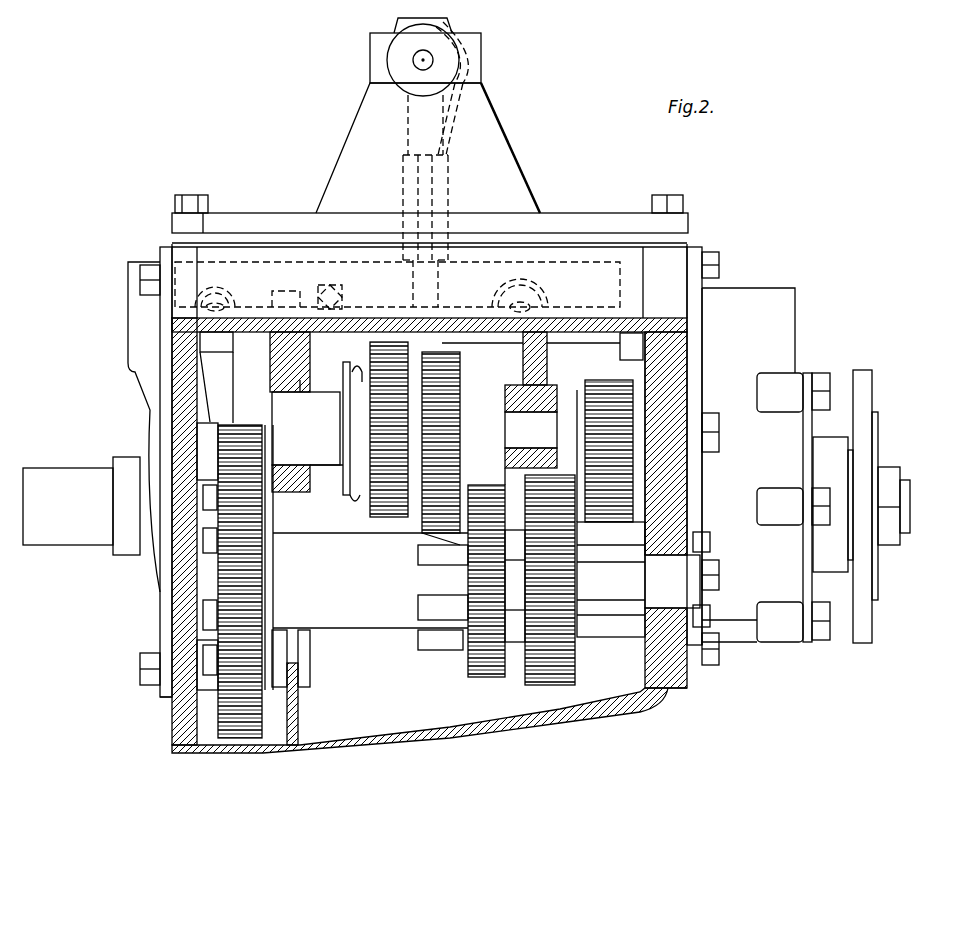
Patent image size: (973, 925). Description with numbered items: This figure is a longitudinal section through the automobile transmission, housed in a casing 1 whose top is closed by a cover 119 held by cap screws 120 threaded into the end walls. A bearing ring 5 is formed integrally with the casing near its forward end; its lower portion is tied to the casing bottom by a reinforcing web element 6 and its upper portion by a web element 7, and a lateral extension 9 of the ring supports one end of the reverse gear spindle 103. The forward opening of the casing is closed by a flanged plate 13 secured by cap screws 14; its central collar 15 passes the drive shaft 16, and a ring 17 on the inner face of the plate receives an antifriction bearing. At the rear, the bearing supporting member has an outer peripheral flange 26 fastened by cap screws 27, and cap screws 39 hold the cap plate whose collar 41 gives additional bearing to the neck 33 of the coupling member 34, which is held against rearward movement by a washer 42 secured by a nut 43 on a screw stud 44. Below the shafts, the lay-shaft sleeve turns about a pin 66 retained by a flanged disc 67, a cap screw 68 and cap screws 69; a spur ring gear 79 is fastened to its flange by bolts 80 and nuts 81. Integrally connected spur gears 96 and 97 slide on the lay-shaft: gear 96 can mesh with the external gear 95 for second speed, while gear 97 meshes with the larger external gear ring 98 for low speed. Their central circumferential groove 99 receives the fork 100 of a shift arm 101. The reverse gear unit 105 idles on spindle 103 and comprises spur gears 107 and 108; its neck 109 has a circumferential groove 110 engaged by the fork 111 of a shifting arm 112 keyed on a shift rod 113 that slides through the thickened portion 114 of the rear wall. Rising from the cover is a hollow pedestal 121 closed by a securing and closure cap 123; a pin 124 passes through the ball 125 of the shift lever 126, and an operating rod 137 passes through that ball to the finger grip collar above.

The casing 1 is at (222, 778).
The bearing ring 5 is at (278, 368).
The reinforcing web element 6 is at (300, 700).
The web element 7 is at (292, 275).
The lateral extension 9 is at (584, 384).
The flanged plate 13 is at (165, 590).
The cap screws 14 is at (150, 685).
The central collar 15 is at (125, 555).
The drive shaft 16 is at (105, 545).
The ring 17 is at (200, 433).
The outer peripheral flange 26 is at (697, 250).
The cap screws 27 is at (710, 255).
The neck 33 is at (852, 460).
The coupling member 34 is at (864, 630).
The cap screws 39 is at (820, 372).
The collar 41 is at (835, 447).
The washer 42 is at (880, 555).
The nut 43 is at (888, 470).
The screw stud 44 is at (906, 480).
The pin 66 is at (658, 585).
The flanged disc 67 is at (712, 574).
The cap screw 68 is at (712, 563).
The cap screws 69 is at (710, 537).
The spur ring gear 79 is at (280, 574).
The bolts 80 is at (278, 600).
The nuts 81 is at (172, 702).
The external gear 95 is at (600, 380).
The spur gear 96 is at (578, 668).
The spur gear 97 is at (472, 655).
The external gear ring 98 is at (430, 536).
The central circumferential groove 99 is at (518, 645).
The fork 100 is at (518, 480).
The shift arm 101 is at (503, 408).
The reverse gear spindle 103 is at (322, 468).
The reverse gear unit 105 is at (425, 530).
The spur gear 107 is at (500, 388).
The spur gear 108 is at (378, 415).
The neck 109 is at (345, 443).
The circumferential groove 110 is at (355, 503).
The fork 111 is at (352, 368).
The shifting arm 112 is at (305, 392).
The shift rod 113 is at (614, 340).
The thickened portion 114 is at (672, 356).
The cover 119 is at (215, 222).
The cap screws 120 is at (205, 200).
The hollow pedestal 121 is at (490, 155).
The securing and closure cap 123 is at (472, 60).
The pin 124 is at (414, 63).
The ball 125 is at (392, 60).
The shift lever 126 is at (450, 23).
The operating rod 137 is at (436, 136).